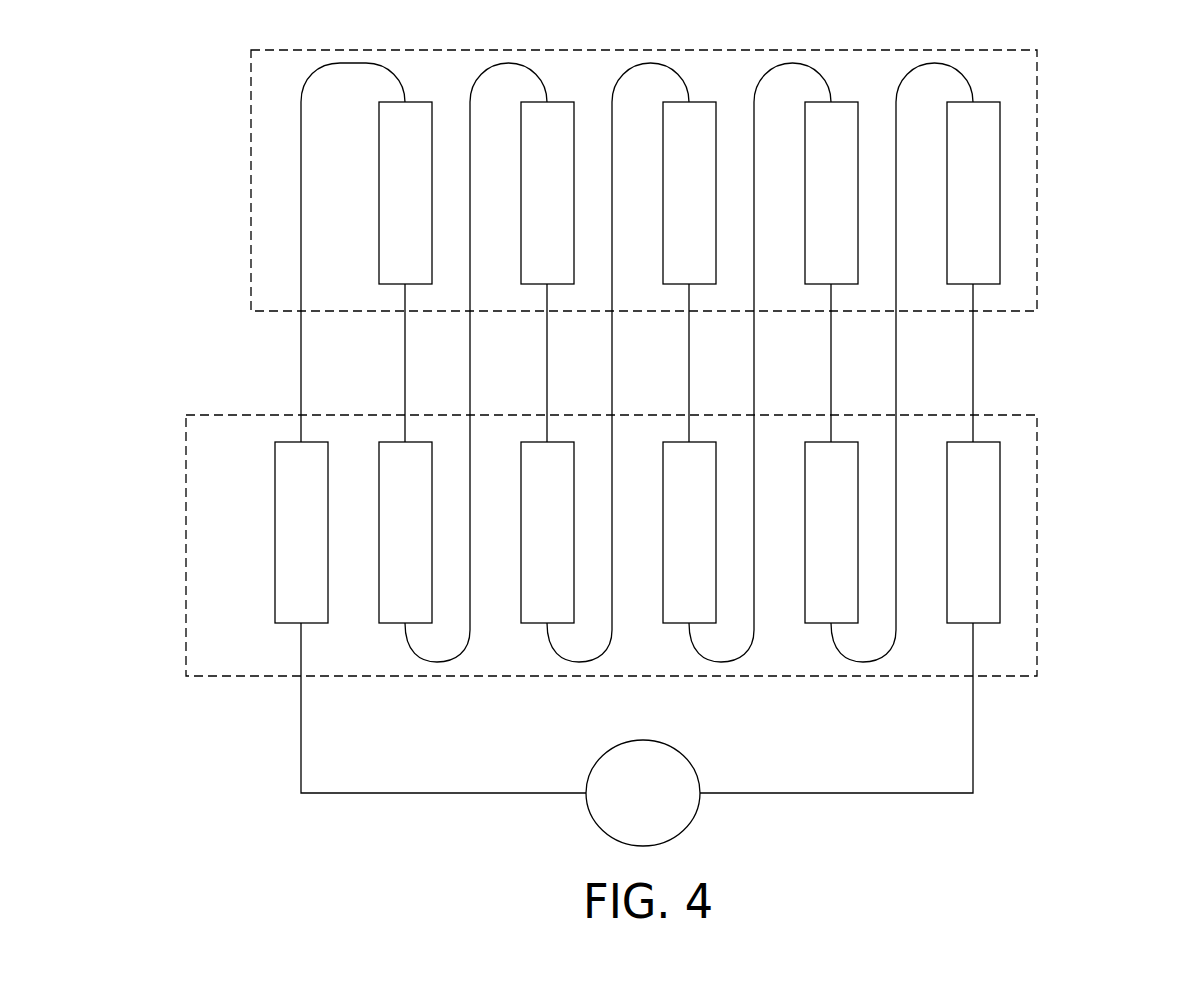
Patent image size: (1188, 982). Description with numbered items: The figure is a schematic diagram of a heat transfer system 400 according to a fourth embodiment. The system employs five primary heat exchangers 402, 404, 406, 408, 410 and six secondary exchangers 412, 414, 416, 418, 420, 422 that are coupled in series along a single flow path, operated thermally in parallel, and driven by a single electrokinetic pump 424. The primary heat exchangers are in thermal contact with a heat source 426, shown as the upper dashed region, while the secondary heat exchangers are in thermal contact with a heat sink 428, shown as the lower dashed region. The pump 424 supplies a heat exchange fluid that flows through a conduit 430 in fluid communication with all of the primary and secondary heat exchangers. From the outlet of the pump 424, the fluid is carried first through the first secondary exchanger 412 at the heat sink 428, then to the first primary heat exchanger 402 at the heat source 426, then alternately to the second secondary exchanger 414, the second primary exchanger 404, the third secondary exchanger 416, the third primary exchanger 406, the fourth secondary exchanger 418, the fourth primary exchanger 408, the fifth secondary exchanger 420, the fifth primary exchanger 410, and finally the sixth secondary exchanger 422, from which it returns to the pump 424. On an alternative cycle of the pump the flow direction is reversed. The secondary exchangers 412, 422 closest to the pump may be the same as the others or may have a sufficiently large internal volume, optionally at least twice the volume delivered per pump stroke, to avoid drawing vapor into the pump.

The heat transfer system 400 is at (1063, 285).
The first primary heat exchanger 402 is at (418, 115).
The second primary heat exchanger 404 is at (560, 115).
The third primary heat exchanger 406 is at (702, 115).
The fourth primary heat exchanger 408 is at (844, 115).
The fifth primary heat exchanger 410 is at (986, 115).
The first secondary heat exchanger 412 is at (315, 455).
The second secondary heat exchanger 414 is at (416, 455).
The third secondary heat exchanger 416 is at (558, 455).
The fourth secondary heat exchanger 418 is at (701, 455).
The fifth secondary heat exchanger 420 is at (842, 455).
The sixth secondary heat exchanger 422 is at (985, 455).
The electrokinetic pump 424 is at (676, 781).
The heat source 426 is at (1023, 141).
The heat sink 428 is at (1023, 531).
The conduit 430 is at (973, 780).